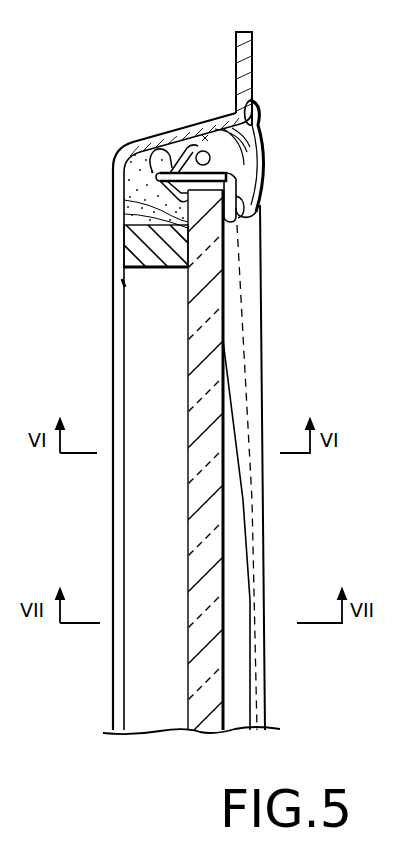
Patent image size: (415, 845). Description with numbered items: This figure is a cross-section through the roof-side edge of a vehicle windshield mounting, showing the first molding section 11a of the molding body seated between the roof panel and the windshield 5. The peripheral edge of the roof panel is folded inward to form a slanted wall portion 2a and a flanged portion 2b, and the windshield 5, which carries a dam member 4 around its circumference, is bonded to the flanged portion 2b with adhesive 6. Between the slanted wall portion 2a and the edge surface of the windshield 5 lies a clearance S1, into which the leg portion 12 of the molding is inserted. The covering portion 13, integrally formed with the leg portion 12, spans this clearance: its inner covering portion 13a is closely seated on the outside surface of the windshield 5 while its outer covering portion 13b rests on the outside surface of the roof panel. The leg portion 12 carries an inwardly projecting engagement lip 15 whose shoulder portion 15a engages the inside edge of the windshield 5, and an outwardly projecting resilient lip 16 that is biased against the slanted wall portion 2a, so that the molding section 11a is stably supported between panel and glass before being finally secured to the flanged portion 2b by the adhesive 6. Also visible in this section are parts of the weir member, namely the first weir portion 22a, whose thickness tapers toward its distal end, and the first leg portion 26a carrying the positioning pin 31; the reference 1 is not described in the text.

The glass panel (window plate) 1 is at (254, 62).
The slanted wall portion 2a is at (143, 137).
The flanged portion 2b is at (124, 205).
The dam member 4 is at (140, 250).
The windshield 5 is at (188, 318).
The adhesive 6 is at (135, 191).
The first molding section 11a is at (258, 179).
The leg portion 12 is at (185, 138).
The covering portion 13 is at (253, 158).
The inner covering portion 13a is at (255, 213).
The outer covering portion 13b is at (259, 124).
The engagement lip 15 is at (125, 228).
The shoulder portion 15a is at (122, 248).
The resilient lip 16 is at (168, 137).
The first weir portion 22a is at (258, 197).
The first leg portion 26a is at (252, 143).
The positioning pin 31 is at (214, 132).
The clearance S1 is at (207, 133).